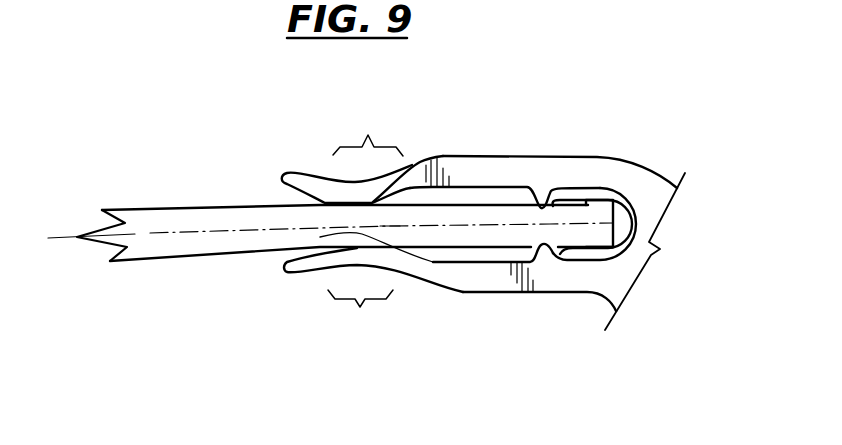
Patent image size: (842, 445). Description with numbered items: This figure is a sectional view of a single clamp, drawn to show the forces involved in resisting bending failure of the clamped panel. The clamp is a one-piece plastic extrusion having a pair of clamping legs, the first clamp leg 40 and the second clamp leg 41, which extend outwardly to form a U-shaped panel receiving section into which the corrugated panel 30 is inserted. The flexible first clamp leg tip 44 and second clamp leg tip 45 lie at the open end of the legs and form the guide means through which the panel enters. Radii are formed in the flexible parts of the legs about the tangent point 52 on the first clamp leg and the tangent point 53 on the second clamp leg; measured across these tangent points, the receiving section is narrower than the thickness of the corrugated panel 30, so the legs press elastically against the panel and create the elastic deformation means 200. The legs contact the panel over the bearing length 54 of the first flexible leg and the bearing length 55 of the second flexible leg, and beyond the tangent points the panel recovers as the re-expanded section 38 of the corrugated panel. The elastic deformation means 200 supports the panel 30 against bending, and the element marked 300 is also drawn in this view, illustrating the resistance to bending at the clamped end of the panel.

The corrugated panel 30 is at (168, 259).
The re-expanded section of corrugated panel 38 is at (587, 217).
The first clamp leg 40 is at (498, 155).
The second clamp leg 41 is at (477, 292).
The first clamp leg tip 44 is at (281, 181).
The second clamp leg tip 45 is at (287, 273).
The tangent point radii first clamp leg and panel 52 is at (404, 167).
The tangent point radii second clamp leg and panel 53 is at (320, 237).
The bearing length between first flexible leg and panel 54 is at (368, 135).
The bearing length between second flexible leg and panel 55 is at (360, 307).
The elastic deformation means 200 is at (387, 226).
The end cap 300 is at (545, 225).